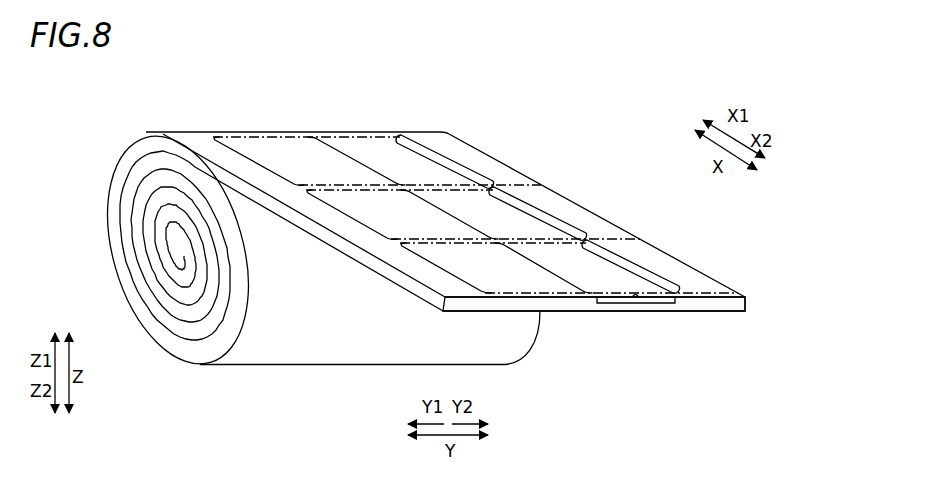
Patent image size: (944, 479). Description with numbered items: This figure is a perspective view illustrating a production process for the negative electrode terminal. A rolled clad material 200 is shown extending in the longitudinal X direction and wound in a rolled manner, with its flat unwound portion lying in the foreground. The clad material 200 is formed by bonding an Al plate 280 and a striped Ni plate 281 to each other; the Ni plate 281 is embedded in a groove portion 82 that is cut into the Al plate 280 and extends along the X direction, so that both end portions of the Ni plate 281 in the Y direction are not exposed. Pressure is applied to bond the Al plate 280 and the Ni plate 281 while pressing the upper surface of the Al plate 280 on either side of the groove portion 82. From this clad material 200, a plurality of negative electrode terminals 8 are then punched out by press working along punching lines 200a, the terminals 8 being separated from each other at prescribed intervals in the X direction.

The clad material 200 is at (669, 93).
The punching lines 200a is at (445, 133).
The negative electrode terminal 8 is at (478, 169).
The Al plate 280 is at (702, 300).
The Ni plate 281 is at (610, 300).
The groove portion 82 is at (636, 299).